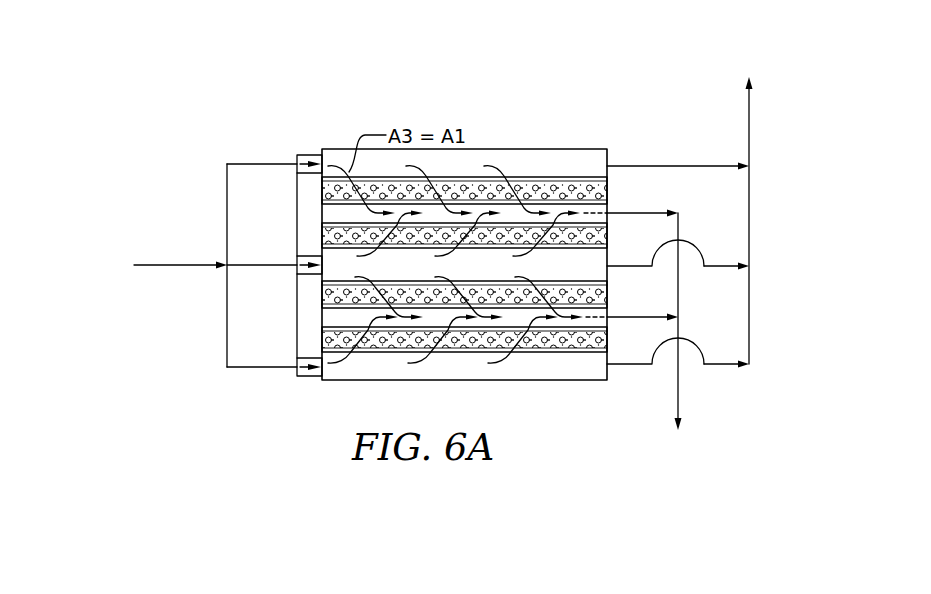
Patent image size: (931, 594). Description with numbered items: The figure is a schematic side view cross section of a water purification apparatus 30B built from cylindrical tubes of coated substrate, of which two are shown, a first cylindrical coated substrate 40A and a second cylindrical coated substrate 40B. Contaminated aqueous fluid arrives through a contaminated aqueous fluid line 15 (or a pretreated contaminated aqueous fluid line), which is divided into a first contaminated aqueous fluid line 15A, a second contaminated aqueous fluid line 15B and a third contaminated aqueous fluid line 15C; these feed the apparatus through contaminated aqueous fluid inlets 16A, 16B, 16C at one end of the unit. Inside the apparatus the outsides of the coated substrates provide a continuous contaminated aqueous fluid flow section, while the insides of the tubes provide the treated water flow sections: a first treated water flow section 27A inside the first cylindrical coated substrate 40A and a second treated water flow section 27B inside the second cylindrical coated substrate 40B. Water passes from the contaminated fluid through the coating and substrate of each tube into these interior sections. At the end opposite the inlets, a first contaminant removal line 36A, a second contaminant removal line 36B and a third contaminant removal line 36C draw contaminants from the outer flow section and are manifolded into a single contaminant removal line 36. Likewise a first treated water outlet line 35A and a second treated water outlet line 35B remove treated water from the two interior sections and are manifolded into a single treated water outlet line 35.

The water purification apparatus 30B is at (238, 75).
The contaminated aqueous fluid line 15 is at (172, 265).
The first contaminated aqueous fluid line 15A is at (252, 164).
The second contaminated aqueous fluid line 15B is at (249, 266).
The third contaminated aqueous fluid line 15C is at (252, 367).
The contaminated aqueous fluid inlet 16A is at (313, 155).
The contaminated aqueous fluid inlet 16B is at (300, 256).
The contaminated aqueous fluid inlet 16C is at (313, 377).
The first cylindrical coated substrate 40A is at (435, 200).
The second cylindrical coated substrate 40B is at (435, 318).
The first treated water flow section 27A is at (560, 211).
The second treated water flow section 27B is at (585, 318).
The treated water outlet line 35 is at (680, 334).
The first treated water outlet line 35A is at (628, 215).
The second treated water outlet line 35B is at (628, 319).
The contaminant removal line 36 is at (749, 116).
The first contaminant removal line 36A is at (672, 166).
The second contaminant removal line 36B is at (722, 267).
The third contaminant removal line 36C is at (720, 365).